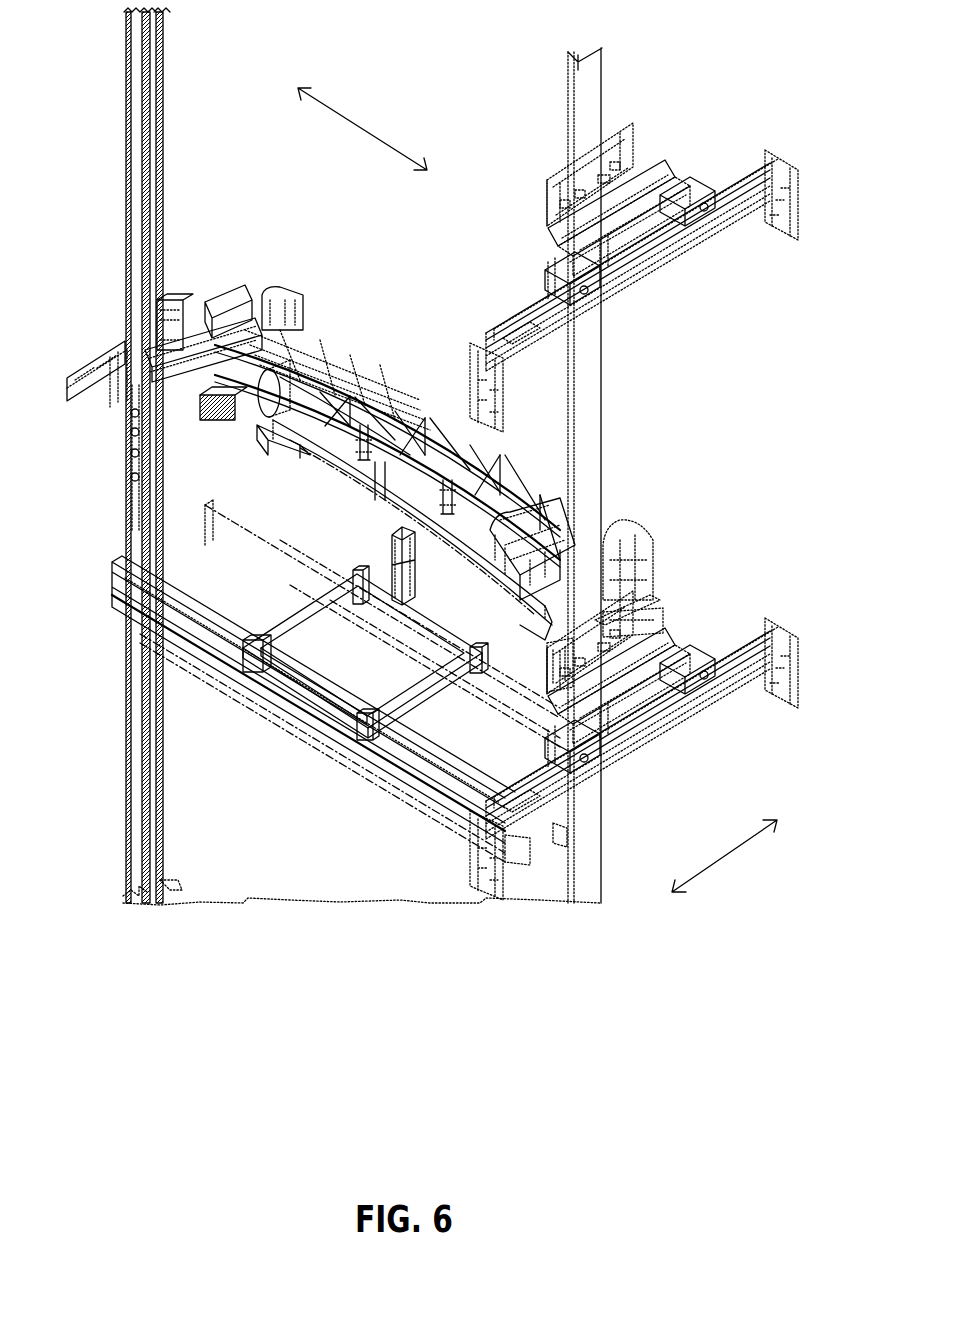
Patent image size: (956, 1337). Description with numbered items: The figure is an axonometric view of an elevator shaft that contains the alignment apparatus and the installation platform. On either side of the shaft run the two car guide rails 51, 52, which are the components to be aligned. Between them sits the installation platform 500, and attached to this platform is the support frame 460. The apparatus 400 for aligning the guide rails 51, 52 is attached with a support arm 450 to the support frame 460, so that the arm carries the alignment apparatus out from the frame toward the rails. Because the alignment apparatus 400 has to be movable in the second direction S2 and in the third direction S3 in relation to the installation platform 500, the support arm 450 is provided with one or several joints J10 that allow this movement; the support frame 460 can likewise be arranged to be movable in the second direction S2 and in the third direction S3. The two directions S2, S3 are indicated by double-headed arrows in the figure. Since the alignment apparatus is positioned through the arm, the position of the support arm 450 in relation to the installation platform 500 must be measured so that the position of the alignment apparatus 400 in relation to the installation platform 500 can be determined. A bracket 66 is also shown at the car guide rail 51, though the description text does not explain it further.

The car guide rail 51 is at (127, 61).
The car guide rail 52 is at (592, 73).
The mounting bracket 66 is at (87, 383).
The apparatus for aligning the guide rails 400 is at (387, 306).
The support arm 450 is at (442, 574).
The support frame 460 is at (422, 695).
The installation platform 500 is at (245, 785).
The joint J10 is at (371, 525).
The second direction S2 is at (368, 127).
The third direction S3 is at (717, 857).